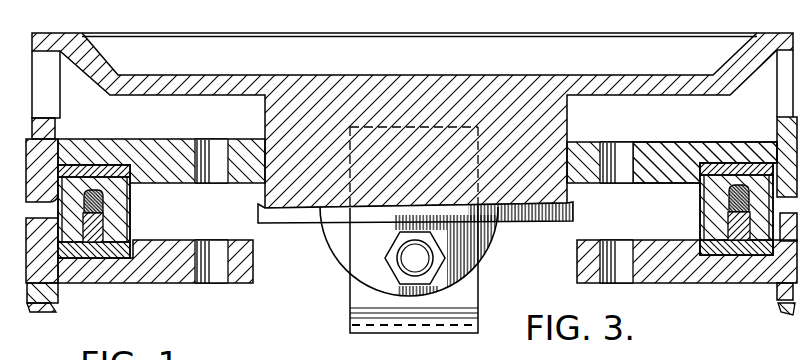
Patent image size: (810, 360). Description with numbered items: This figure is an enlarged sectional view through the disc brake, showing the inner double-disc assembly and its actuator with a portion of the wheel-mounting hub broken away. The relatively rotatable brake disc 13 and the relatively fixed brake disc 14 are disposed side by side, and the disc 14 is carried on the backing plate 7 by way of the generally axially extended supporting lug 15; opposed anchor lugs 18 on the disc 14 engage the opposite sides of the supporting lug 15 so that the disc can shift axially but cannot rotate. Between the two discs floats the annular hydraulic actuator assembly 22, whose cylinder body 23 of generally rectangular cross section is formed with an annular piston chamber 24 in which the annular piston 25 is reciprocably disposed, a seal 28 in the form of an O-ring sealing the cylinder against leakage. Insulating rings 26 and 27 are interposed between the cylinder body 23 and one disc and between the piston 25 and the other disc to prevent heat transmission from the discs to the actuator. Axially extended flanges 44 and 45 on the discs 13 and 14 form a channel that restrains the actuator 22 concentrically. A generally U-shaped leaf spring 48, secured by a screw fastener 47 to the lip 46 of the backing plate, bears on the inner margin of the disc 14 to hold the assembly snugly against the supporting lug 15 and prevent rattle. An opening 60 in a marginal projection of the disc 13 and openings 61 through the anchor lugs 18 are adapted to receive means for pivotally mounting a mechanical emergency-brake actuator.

The backing plate 7 is at (633, 84).
The brake disc 13 is at (689, 280).
The brake disc 14 is at (652, 147).
The supporting lug 15 is at (540, 222).
The anchor lugs 18 is at (242, 138).
The hydraulic actuator assembly 22 is at (130, 197).
The cylinder body 23 is at (706, 190).
The piston chamber 24 is at (732, 202).
The piston 25 is at (730, 227).
The insulating ring 26 is at (713, 163).
The insulating ring 27 is at (749, 256).
The seal 28 is at (742, 185).
The flange 44 is at (62, 232).
The flange 45 is at (76, 163).
The lip 46 is at (442, 253).
The screw fastener 47 is at (422, 260).
The leaf spring 48 is at (428, 334).
The opening 60 is at (210, 277).
The openings 61 is at (211, 178).